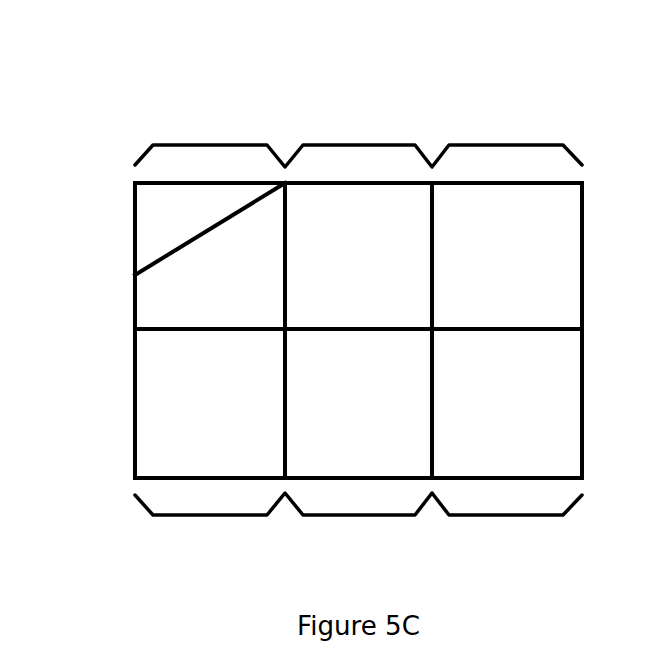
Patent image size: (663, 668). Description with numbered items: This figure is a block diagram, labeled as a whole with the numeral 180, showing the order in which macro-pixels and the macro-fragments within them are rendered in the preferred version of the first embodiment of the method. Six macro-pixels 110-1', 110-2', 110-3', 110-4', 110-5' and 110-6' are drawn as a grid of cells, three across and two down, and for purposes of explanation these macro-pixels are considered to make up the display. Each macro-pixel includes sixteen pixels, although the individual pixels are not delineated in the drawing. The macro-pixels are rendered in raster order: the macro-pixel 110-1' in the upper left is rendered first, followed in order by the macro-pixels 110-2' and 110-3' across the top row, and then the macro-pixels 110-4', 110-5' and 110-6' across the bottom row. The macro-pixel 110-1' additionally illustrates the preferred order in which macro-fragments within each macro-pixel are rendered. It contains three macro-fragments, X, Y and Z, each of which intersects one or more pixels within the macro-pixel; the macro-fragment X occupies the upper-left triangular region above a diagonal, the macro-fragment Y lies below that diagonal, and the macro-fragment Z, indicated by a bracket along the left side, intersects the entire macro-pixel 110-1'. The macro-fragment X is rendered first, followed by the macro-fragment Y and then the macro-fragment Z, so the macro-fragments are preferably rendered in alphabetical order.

The array of cells / memory layout 180 is at (382, 48).
The macro-pixel 110-1' is at (211, 120).
The macro-pixel 110-2' is at (359, 120).
The macro-pixel 110-3' is at (508, 120).
The macro-pixel 110-4' is at (211, 541).
The macro-pixel 110-5' is at (359, 541).
The macro-pixel 110-6' is at (508, 541).
The macro-fragment X is at (192, 208).
The macro-fragment Y is at (228, 273).
The macro-fragment Z is at (99, 257).